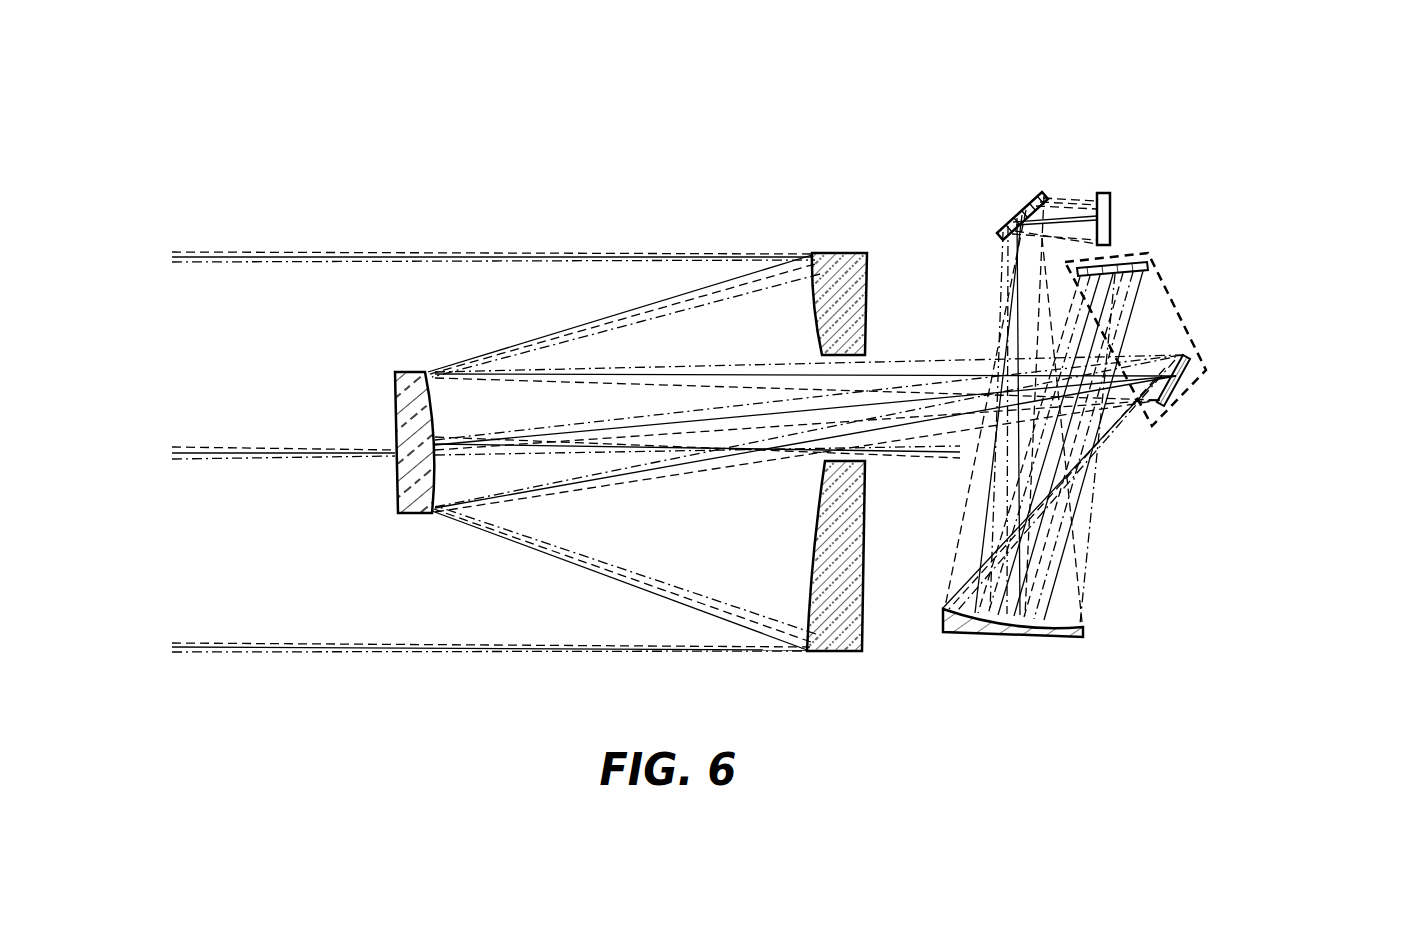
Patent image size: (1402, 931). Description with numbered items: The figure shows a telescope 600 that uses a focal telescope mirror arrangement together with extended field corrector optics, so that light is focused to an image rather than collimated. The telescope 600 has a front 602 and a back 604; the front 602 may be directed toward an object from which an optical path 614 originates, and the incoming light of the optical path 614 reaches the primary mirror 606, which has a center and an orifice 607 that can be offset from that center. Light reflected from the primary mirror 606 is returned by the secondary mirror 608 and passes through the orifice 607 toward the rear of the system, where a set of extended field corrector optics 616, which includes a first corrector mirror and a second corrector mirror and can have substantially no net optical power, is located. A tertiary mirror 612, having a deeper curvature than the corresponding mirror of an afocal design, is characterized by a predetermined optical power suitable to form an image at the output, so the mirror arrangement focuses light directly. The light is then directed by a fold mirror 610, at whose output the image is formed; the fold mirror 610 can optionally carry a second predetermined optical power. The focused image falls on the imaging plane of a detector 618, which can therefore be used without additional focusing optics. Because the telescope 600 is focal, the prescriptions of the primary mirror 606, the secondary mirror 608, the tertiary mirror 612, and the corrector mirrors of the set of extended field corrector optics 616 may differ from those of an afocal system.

The telescope 600 is at (1052, 68).
The front 602 is at (139, 540).
The back 604 is at (1217, 427).
The primary mirror 606 is at (835, 293).
The orifice 607 is at (810, 352).
The secondary mirror 608 is at (396, 390).
The fold mirror 610 is at (1018, 212).
The tertiary mirror 612 is at (993, 627).
The optical path 614 is at (302, 683).
The set of extended field corrector optics 616 is at (1186, 332).
The detector 618 is at (1112, 196).